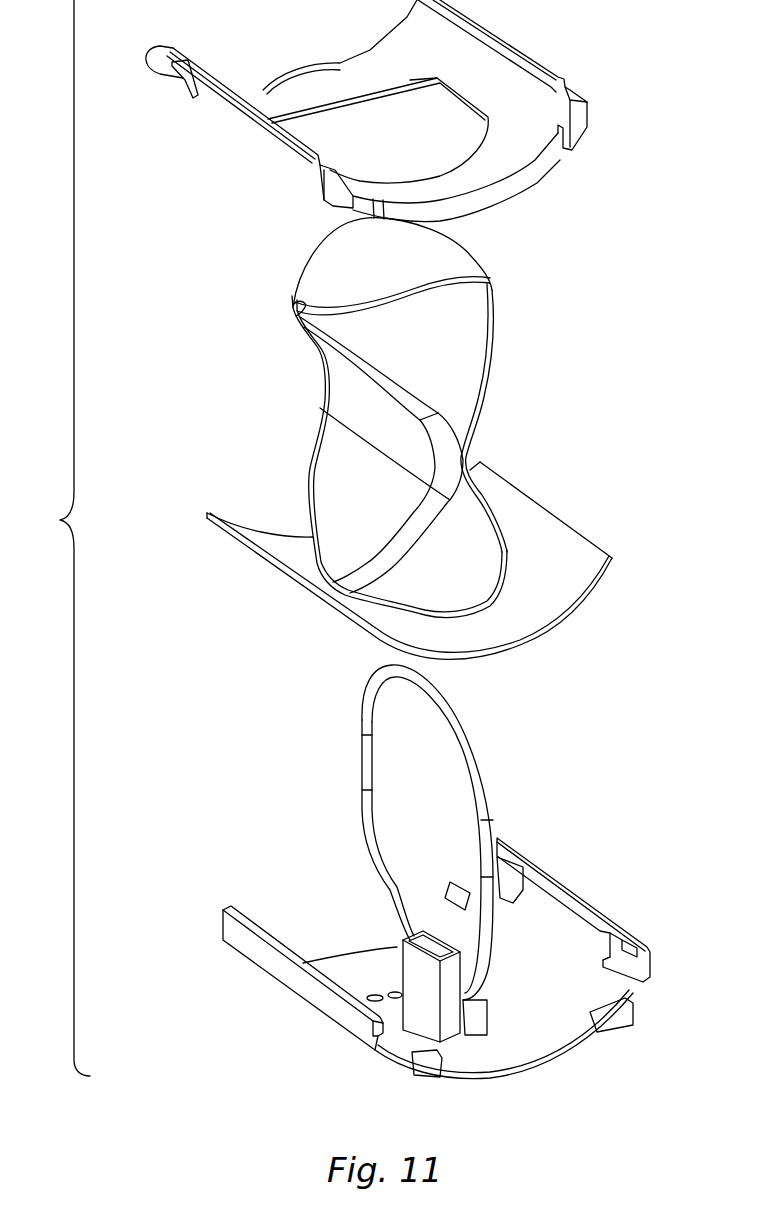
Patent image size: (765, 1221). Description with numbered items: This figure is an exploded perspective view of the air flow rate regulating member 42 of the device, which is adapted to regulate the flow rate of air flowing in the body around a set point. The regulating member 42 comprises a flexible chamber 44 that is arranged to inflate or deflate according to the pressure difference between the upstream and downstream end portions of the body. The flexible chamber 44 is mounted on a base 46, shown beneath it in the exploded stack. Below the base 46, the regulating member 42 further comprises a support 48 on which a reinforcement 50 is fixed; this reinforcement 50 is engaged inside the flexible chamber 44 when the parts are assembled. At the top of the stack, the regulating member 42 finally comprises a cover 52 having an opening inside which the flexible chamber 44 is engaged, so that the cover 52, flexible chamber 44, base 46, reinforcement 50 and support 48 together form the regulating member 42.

The regulating member 42 is at (54, 538).
The flexible chamber 44 is at (458, 330).
The base 46 is at (573, 555).
The support 48 is at (567, 947).
The reinforcement 50 is at (475, 770).
The cover 52 is at (553, 117).